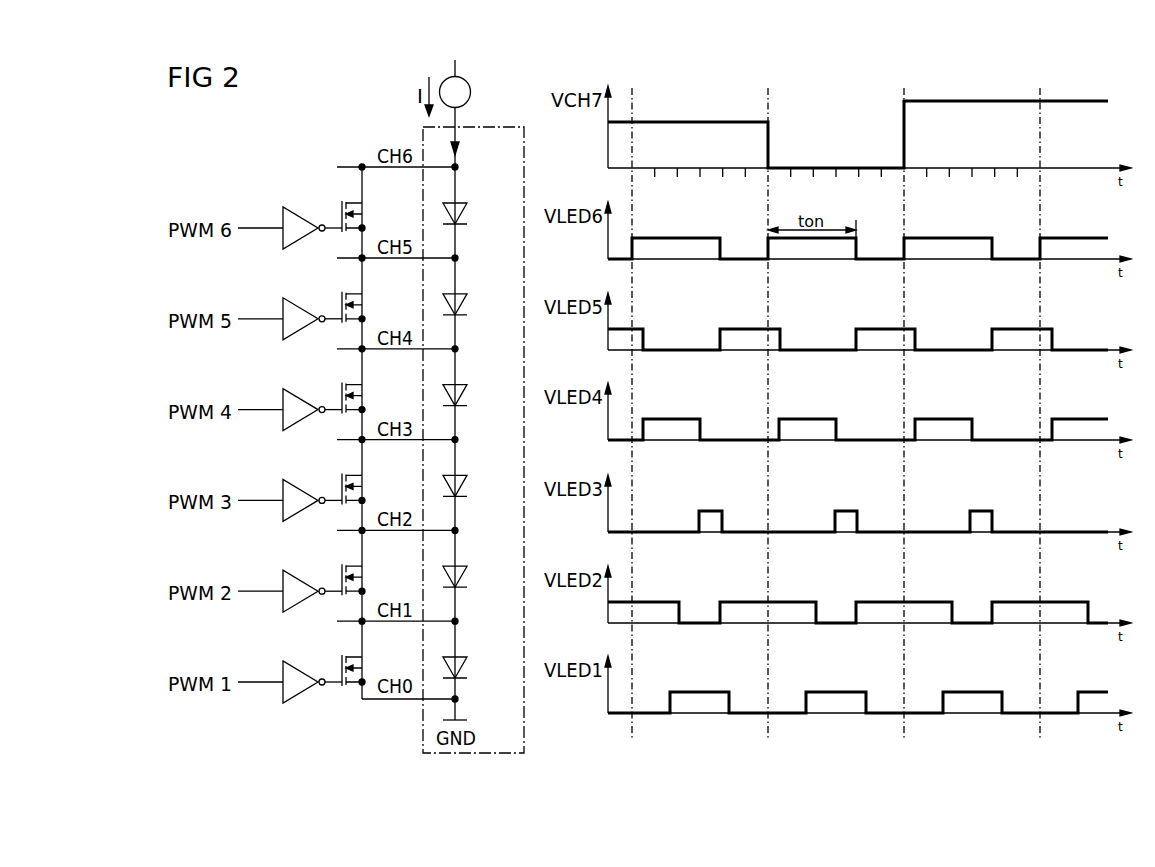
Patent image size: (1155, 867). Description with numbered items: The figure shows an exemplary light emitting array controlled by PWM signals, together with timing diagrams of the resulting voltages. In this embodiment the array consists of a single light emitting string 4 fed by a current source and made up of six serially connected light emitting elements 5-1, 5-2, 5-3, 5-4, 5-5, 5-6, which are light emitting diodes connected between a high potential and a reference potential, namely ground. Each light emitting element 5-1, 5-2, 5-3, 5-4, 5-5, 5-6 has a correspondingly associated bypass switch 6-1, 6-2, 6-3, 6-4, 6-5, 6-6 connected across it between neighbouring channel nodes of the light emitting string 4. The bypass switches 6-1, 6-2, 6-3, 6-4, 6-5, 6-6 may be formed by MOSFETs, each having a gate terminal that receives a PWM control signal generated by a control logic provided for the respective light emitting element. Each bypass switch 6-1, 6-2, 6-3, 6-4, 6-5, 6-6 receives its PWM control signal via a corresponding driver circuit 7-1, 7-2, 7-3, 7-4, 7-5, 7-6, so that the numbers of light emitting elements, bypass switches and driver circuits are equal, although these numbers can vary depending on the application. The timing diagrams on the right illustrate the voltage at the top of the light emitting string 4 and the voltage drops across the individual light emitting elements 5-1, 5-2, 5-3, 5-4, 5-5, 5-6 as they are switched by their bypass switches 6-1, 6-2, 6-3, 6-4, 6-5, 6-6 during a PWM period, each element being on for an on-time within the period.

The light emitting string 4 is at (481, 127).
The light emitting element 5-1 is at (479, 679).
The light emitting element 5-2 is at (479, 588).
The light emitting element 5-3 is at (479, 497).
The light emitting element 5-4 is at (479, 407).
The light emitting element 5-5 is at (479, 316).
The light emitting element 5-6 is at (468, 222).
The bypass switch 6-1 is at (325, 660).
The bypass switch 6-2 is at (325, 569).
The bypass switch 6-3 is at (325, 478).
The bypass switch 6-4 is at (325, 388).
The bypass switch 6-5 is at (325, 297).
The bypass switch 6-6 is at (340, 213).
The driver circuit 7-1 is at (284, 691).
The driver circuit 7-2 is at (284, 600).
The driver circuit 7-3 is at (284, 509).
The driver circuit 7-4 is at (284, 419).
The driver circuit 7-5 is at (284, 328).
The driver circuit 7-6 is at (283, 240).